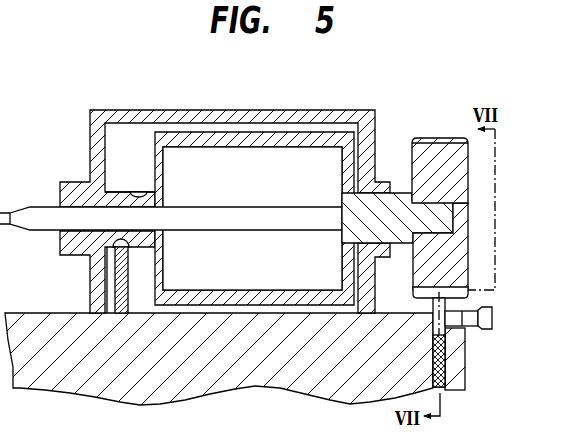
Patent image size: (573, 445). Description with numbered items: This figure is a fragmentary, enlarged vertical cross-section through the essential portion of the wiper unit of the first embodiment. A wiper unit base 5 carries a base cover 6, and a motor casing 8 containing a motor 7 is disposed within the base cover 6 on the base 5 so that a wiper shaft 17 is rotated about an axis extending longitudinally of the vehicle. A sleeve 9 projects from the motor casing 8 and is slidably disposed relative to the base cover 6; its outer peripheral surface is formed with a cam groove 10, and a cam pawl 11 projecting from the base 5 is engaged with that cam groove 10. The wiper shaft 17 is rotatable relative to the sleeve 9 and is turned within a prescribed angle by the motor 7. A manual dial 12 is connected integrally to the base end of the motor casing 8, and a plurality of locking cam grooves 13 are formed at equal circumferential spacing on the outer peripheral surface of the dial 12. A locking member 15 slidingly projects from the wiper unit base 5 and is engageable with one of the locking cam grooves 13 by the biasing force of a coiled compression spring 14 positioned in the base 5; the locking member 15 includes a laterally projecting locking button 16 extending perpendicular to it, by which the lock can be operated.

The wiper unit base 5 is at (58, 313).
The base cover 6 is at (166, 117).
The motor 7 is at (311, 155).
The motor casing 8 is at (237, 140).
The sleeve 9 is at (115, 192).
The cam groove 10 is at (137, 192).
The cam pawl 11 is at (128, 255).
The manual dial 12 is at (468, 173).
The locking cam grooves 13 is at (430, 140).
The coiled compression spring 14 is at (447, 371).
The locking member 15 is at (432, 308).
The locking button 16 is at (487, 320).
The wiper shaft 17 is at (38, 207).